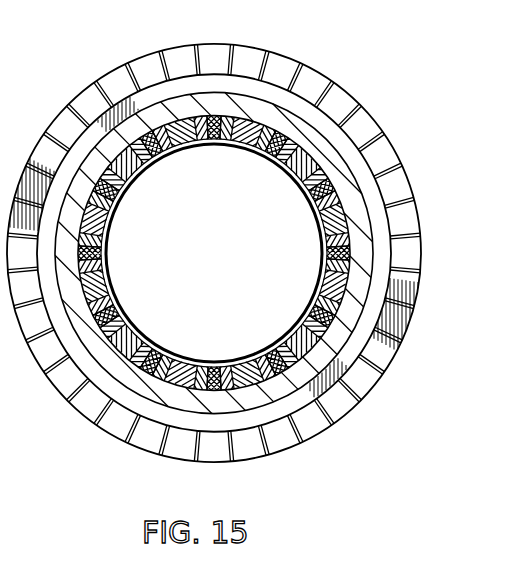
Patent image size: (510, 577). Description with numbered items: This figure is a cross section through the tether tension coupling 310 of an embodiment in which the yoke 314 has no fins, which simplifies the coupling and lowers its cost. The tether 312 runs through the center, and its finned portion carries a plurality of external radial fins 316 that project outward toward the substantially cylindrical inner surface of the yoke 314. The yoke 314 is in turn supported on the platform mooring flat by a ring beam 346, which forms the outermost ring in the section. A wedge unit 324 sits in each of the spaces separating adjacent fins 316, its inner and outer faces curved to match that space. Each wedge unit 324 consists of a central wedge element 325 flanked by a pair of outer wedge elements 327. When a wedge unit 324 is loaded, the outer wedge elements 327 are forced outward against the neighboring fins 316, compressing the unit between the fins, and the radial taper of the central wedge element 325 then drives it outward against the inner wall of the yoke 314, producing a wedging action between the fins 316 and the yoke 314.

The tether tension coupling 310 is at (214, 269).
The tether 312 is at (243, 146).
The yoke 314 is at (166, 107).
The radial fins 316 is at (214, 360).
The wedge unit 324 is at (296, 338).
The central wedge element 325 is at (327, 222).
The outer wedge elements 327 is at (319, 205).
The ring beam 346 is at (278, 64).